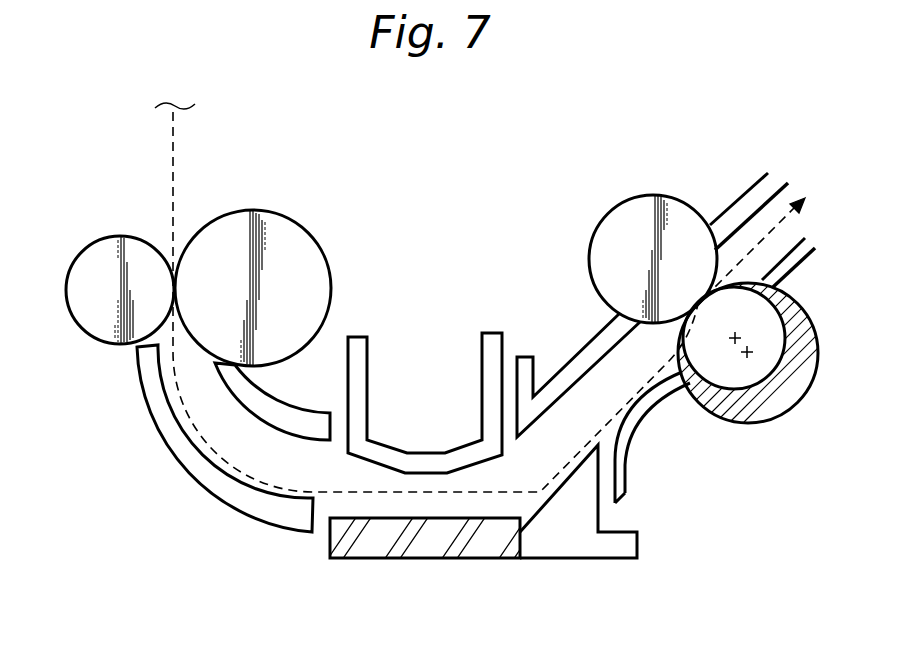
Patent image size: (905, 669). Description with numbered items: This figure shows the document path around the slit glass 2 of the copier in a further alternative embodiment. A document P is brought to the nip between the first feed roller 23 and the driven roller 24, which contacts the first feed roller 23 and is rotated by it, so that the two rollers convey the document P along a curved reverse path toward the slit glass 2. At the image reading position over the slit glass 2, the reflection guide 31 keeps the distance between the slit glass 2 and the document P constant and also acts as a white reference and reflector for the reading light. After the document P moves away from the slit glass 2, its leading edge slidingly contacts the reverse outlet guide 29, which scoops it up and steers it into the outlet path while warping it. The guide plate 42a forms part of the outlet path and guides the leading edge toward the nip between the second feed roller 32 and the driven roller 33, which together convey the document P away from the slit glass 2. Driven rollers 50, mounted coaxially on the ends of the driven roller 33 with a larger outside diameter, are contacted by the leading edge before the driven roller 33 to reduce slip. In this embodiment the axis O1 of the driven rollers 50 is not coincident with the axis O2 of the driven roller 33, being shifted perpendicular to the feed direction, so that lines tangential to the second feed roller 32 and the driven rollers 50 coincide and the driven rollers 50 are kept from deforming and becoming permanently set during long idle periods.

The slit glass 2 is at (373, 543).
The first feed roller 23 is at (303, 255).
The driven roller 24 is at (85, 320).
The reverse outlet guide 29 is at (558, 542).
The reflection guide 31 is at (361, 365).
The second feed roller 32 is at (608, 240).
The driven roller 33 is at (753, 365).
The driven rollers 50 is at (773, 382).
The guide plate 42a is at (627, 473).
The document P is at (173, 142).
The axis of the driven rollers 50 O1 is at (730, 363).
The axis of the driven roller 33 O2 is at (736, 322).